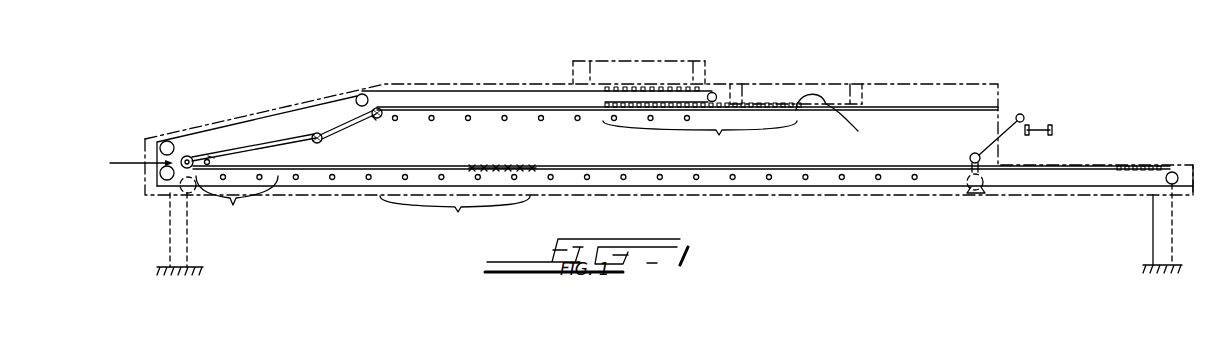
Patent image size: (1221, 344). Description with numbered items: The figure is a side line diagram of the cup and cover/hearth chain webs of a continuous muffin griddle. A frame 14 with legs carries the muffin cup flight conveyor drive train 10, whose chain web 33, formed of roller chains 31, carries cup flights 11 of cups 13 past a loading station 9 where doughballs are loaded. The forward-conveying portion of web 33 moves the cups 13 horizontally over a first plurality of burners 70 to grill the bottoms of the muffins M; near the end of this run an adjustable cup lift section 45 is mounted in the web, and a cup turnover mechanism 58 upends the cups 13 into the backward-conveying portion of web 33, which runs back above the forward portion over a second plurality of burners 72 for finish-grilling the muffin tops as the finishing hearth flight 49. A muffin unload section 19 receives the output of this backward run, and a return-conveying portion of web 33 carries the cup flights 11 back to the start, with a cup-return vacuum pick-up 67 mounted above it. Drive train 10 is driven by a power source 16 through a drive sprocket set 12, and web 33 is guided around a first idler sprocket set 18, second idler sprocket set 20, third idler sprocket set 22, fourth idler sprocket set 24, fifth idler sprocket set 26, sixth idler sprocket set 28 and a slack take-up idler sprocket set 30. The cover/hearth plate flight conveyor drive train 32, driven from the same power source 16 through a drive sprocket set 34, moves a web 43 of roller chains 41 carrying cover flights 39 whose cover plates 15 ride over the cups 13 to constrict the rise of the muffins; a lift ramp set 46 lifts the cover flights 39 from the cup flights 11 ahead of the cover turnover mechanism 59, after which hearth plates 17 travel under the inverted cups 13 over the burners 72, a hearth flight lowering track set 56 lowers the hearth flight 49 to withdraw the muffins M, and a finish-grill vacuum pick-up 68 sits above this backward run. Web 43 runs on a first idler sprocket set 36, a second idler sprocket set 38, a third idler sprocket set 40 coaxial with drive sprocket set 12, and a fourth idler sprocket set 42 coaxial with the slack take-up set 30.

The loading station 9 is at (1121, 147).
The muffin cup flight conveyor drive train 10 is at (735, 245).
The cup flights 11 is at (603, 181).
The drive sprocket set 12 is at (190, 156).
The cups 13 is at (652, 88).
The frame 14 is at (303, 197).
The muffin cup covers 15 is at (460, 165).
The power source 16 is at (190, 194).
The hearth plates 17 is at (837, 119).
The first idler sprocket set 18 is at (1176, 184).
The muffin unload section 19 is at (1014, 95).
The second idler sprocket set 20 is at (167, 181).
The third idler sprocket set 22 is at (168, 141).
The fourth idler sprocket set 24 is at (366, 96).
The fifth idler sprocket set 26 is at (713, 93).
The sixth idler sprocket set 28 is at (382, 110).
The slack take-up idler sprocket set 30 is at (322, 143).
The roller chains 31 is at (508, 91).
The cover/hearth plate flight conveyor drive train 32 is at (583, 144).
The chain web 33 is at (480, 76).
The drive sprocket set 34 is at (1024, 114).
The first idler sprocket set 36 is at (380, 120).
The second idler sprocket set 38 is at (981, 140).
The cover flights 39 is at (634, 154).
The third idler sprocket set 40 is at (214, 152).
The roller chains 41 is at (522, 112).
The fourth idler sprocket set 42 is at (318, 133).
The web 43 is at (573, 125).
The adjustable cup lift section 45 is at (480, 229).
The lift ramp set 46 is at (237, 201).
The finishing hearth flight 49 is at (462, 126).
The hearth flight lowering track set 56 is at (719, 135).
The cup turnover mechanism 58 is at (129, 164).
The cover turnover mechanism 59 is at (220, 152).
The cup-return vacuum pick-up 67 is at (596, 60).
The finish-grill vacuum pick-up 68 is at (775, 84).
The first plurality of linearly-disposed burners 70 is at (917, 180).
The second plurality of linearly-disposed burners 72 is at (228, 158).
The muffins M is at (800, 112).